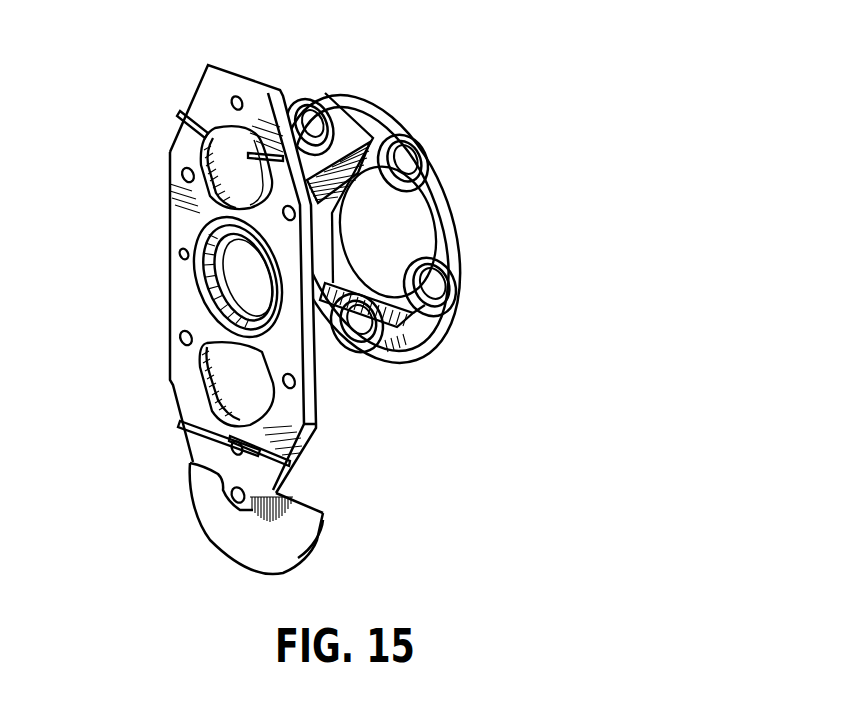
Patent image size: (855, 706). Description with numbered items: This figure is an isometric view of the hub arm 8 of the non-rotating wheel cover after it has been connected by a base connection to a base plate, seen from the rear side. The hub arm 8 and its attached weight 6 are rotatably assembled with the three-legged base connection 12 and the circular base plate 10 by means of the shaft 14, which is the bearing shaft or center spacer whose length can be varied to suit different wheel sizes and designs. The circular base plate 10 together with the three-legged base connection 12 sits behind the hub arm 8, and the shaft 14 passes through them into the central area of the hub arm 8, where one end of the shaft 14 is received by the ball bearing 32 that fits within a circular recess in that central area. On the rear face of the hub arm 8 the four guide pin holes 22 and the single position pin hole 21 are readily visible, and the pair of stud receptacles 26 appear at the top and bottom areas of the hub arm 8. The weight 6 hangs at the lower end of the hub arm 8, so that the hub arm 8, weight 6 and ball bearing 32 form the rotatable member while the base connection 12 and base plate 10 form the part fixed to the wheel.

The weight 6 is at (233, 538).
The hub arm 8 is at (188, 403).
The circular base plate 10 is at (423, 222).
The three-legged base connection 12 is at (340, 150).
The shaft 14 is at (330, 257).
The position pin hole 21 is at (180, 254).
The guide pin holes 22 is at (183, 174).
The stud receptacles 26 is at (207, 98).
The ball bearing 32 is at (196, 296).